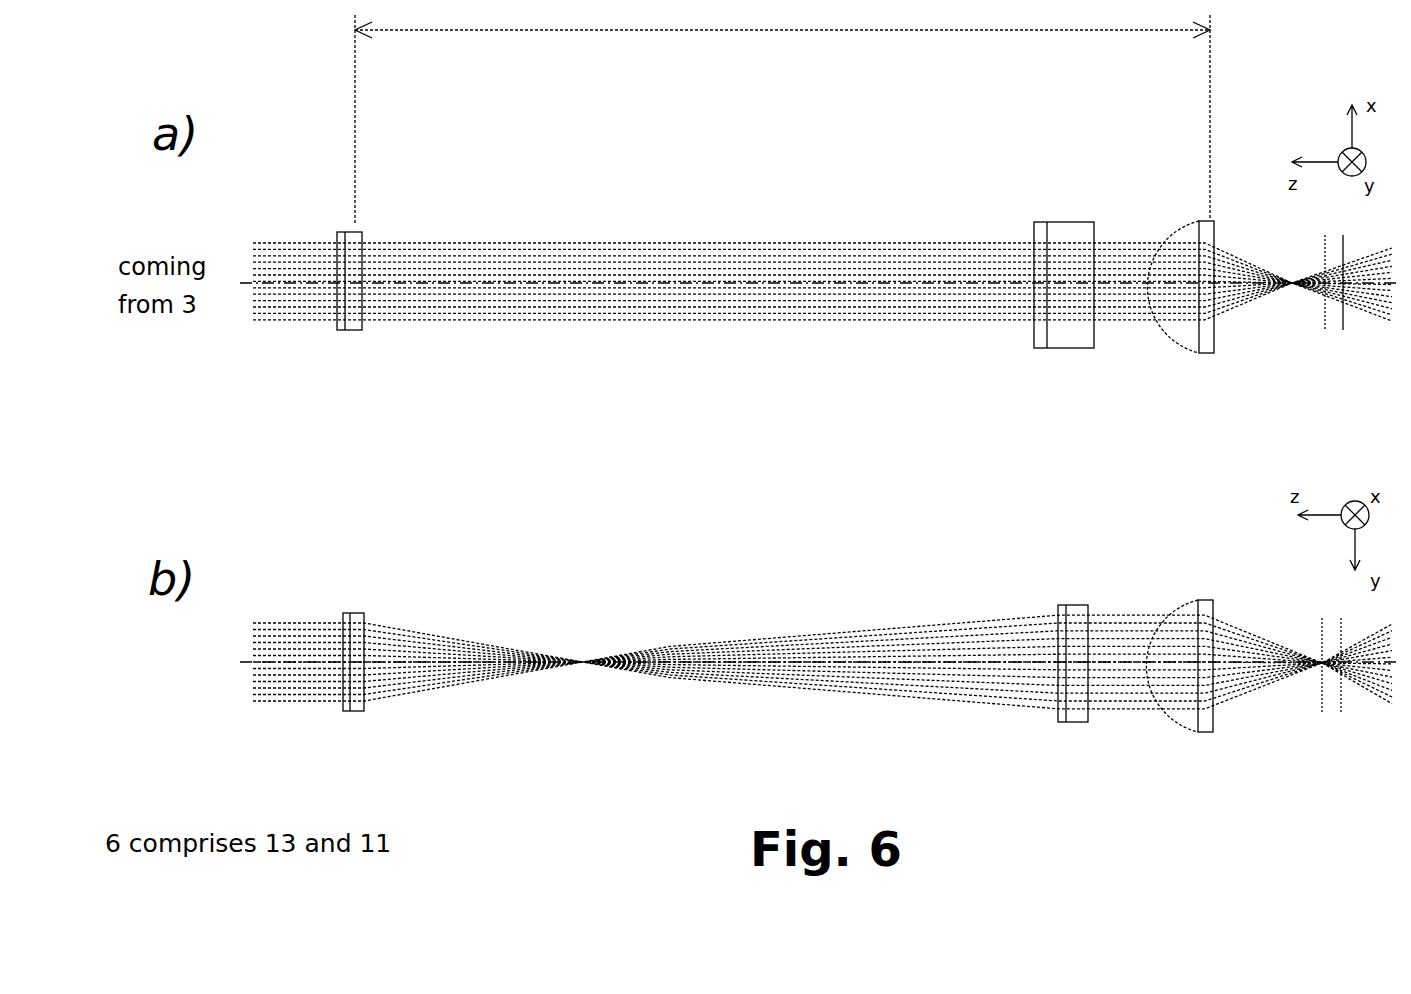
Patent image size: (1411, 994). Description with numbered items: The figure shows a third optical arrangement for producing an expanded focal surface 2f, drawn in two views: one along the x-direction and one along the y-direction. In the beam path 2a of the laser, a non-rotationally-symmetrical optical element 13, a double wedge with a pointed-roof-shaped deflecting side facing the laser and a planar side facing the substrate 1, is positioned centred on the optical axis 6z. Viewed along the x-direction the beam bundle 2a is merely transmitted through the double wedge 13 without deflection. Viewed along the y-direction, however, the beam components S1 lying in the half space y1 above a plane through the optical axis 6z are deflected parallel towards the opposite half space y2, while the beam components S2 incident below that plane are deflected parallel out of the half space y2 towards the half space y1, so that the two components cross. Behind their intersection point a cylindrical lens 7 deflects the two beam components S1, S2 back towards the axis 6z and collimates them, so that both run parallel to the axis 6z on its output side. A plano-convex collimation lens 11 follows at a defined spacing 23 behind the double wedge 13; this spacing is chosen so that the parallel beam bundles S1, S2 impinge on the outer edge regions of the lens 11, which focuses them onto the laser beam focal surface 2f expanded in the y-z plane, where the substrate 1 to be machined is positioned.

The substrate 1 is at (1335, 330).
The beam path 2a is at (290, 268).
The expanded focal surface 2f is at (1320, 682).
The optical axis 6z is at (868, 283).
The cylindrical lens 7 is at (1075, 340).
The plano-convex collimation lens 11 is at (1193, 353).
The non-rotationally-symmetrical optical element 13 is at (359, 337).
The distance 23 is at (782, 112).
The beam components S1 is at (420, 645).
The beam components S2 is at (418, 690).
The half space y1 is at (673, 568).
The half space y2 is at (668, 761).